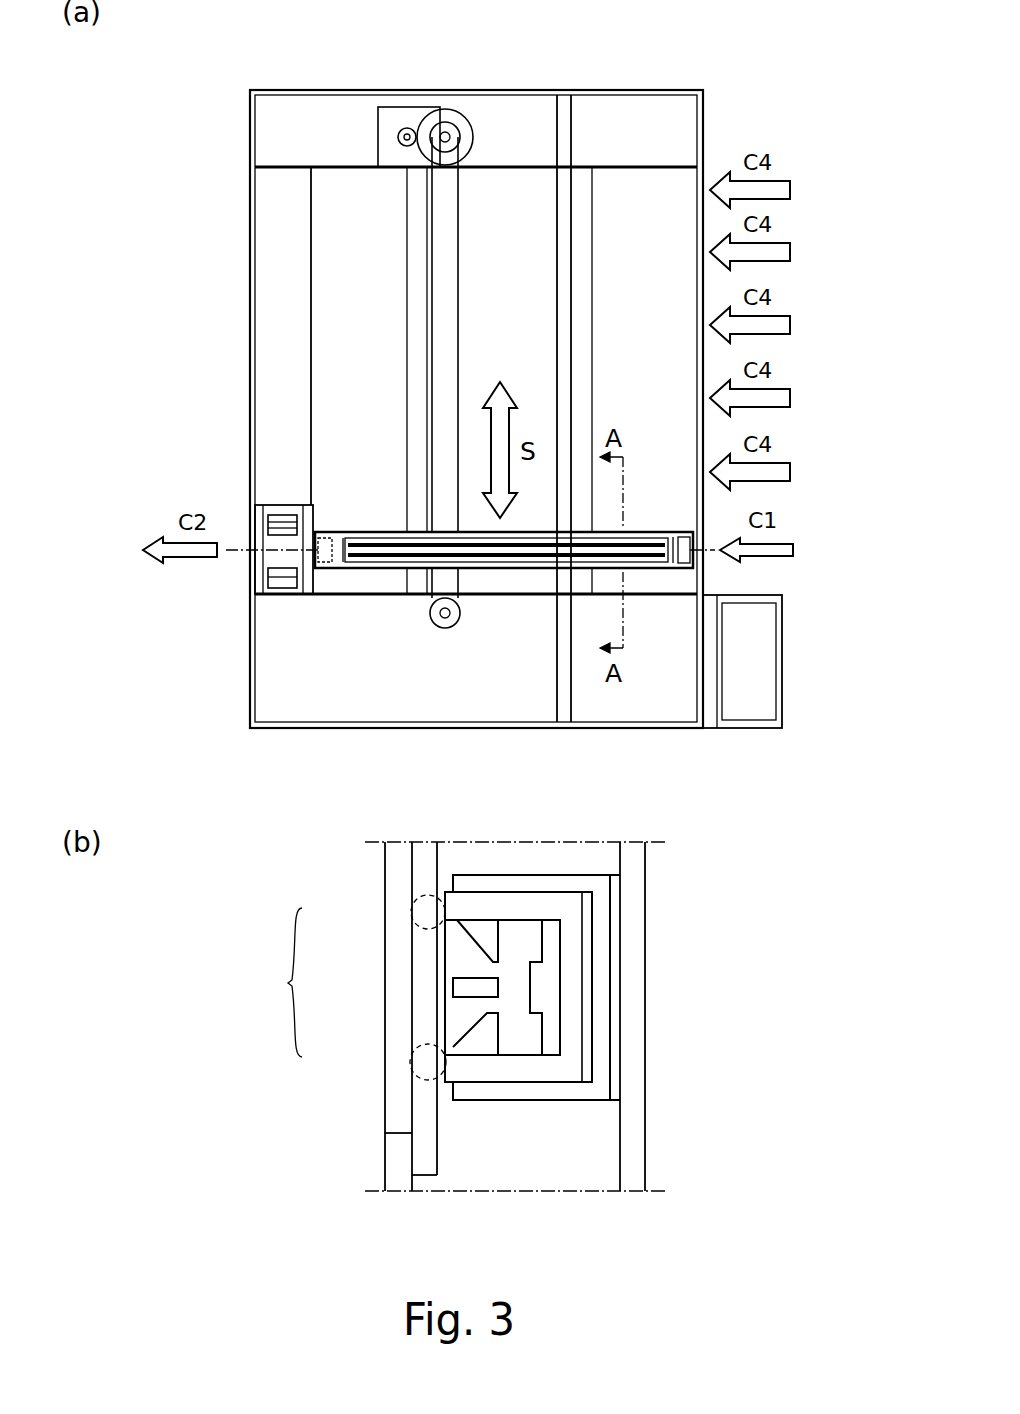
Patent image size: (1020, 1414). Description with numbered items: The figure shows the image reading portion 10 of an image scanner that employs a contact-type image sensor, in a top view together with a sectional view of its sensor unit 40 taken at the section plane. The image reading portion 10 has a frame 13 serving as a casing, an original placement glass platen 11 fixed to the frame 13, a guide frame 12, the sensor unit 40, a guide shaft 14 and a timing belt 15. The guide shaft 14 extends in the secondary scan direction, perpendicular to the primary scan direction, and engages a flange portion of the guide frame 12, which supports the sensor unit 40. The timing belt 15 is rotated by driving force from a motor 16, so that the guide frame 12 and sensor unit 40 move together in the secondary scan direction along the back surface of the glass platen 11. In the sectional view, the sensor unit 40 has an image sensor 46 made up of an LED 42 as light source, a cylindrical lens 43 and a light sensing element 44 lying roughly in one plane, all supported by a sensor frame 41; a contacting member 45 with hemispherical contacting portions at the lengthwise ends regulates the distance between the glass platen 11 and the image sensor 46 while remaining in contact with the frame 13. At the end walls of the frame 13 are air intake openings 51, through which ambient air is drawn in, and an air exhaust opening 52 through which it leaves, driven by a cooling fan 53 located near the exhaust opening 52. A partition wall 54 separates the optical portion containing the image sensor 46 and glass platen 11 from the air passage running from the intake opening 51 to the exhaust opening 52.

The image reading portion 10 is at (752, 74).
The original placement glass platen 11 is at (427, 1155).
The guide frame 12 is at (535, 1093).
The frame 13 is at (497, 115).
The guide shaft 14 is at (563, 125).
The timing belt 15 is at (460, 282).
The motor 16 is at (393, 117).
The sensor unit 40 is at (510, 572).
The sensor frame 41 is at (570, 983).
The LED 42 is at (470, 930).
The cylindrical lens 43 is at (538, 992).
The light sensing element 44 is at (465, 984).
The contacting member 45 is at (438, 895).
The image sensor 46 is at (274, 982).
The air intake opening 51 is at (703, 583).
The air exhaust opening 52 is at (250, 578).
The cooling fan 53 is at (288, 585).
The partition wall 54 is at (357, 583).